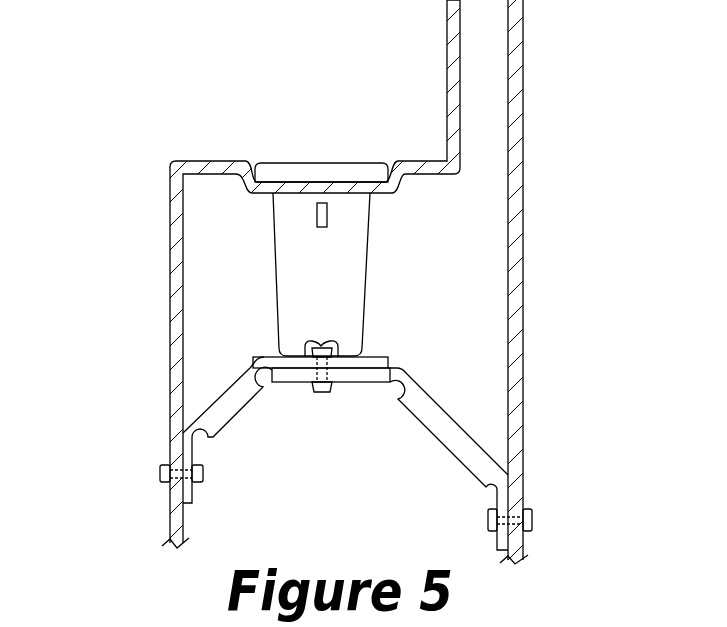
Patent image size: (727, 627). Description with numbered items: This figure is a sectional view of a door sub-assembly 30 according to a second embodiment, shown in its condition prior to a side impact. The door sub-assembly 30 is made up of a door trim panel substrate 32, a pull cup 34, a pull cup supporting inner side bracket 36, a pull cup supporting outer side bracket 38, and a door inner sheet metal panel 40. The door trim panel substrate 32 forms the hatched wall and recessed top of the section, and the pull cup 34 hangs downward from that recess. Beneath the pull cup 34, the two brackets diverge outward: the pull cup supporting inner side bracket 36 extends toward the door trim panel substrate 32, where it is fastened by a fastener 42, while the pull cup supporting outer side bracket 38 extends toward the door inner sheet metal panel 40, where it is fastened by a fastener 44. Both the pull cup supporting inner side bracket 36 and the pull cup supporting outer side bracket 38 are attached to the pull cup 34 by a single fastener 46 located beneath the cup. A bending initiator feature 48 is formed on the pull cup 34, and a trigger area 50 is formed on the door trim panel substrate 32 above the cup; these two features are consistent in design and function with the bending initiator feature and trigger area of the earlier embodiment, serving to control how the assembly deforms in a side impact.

The door sub-assembly 30 is at (72, 159).
The door trim panel substrate 32 is at (170, 332).
The pull cup 34 is at (352, 297).
The pull cup supporting inner side bracket 36 is at (232, 408).
The pull cup supporting outer side bracket 38 is at (438, 442).
The door inner sheet metal panel 40 is at (523, 228).
The fastener 42 is at (160, 477).
The fastener 44 is at (532, 520).
The fastener 46 is at (314, 393).
The bending initiator feature 48 is at (320, 228).
The trigger area 50 is at (298, 190).